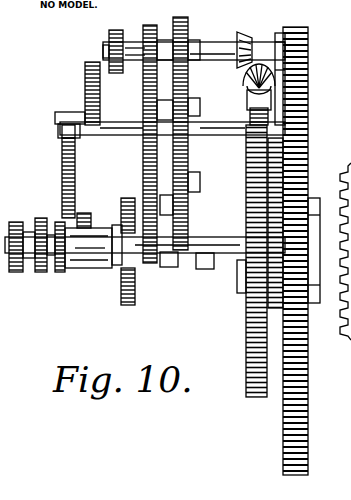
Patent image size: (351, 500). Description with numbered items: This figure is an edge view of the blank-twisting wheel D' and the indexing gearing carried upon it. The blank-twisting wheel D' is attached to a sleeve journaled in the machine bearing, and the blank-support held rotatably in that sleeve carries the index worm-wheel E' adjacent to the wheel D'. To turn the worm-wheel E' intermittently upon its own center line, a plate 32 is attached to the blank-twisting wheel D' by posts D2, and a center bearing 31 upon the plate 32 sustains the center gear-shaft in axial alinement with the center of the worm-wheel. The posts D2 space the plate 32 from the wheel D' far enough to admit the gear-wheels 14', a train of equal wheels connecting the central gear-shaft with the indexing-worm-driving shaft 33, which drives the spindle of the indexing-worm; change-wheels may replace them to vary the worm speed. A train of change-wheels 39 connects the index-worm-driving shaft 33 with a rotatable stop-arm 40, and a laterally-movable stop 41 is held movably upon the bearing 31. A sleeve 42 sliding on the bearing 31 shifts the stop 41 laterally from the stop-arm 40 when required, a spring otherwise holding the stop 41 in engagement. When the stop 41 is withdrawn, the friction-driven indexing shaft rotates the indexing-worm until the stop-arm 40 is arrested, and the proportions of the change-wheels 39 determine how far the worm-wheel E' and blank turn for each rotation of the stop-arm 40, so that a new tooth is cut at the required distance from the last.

The indexing-worm-driving shaft 33 is at (210, 60).
The change-wheels 39 is at (108, 32).
The plate 32 is at (145, 97).
The stop-arm 40 is at (62, 165).
The stop 41 is at (89, 218).
The gear-wheels 14' is at (145, 229).
The center bearing 31 is at (30, 270).
The sleeve 42 is at (86, 270).
The posts D2 is at (216, 256).
The worm-wheel E' is at (236, 261).
The blank-twisting wheel D' is at (313, 251).